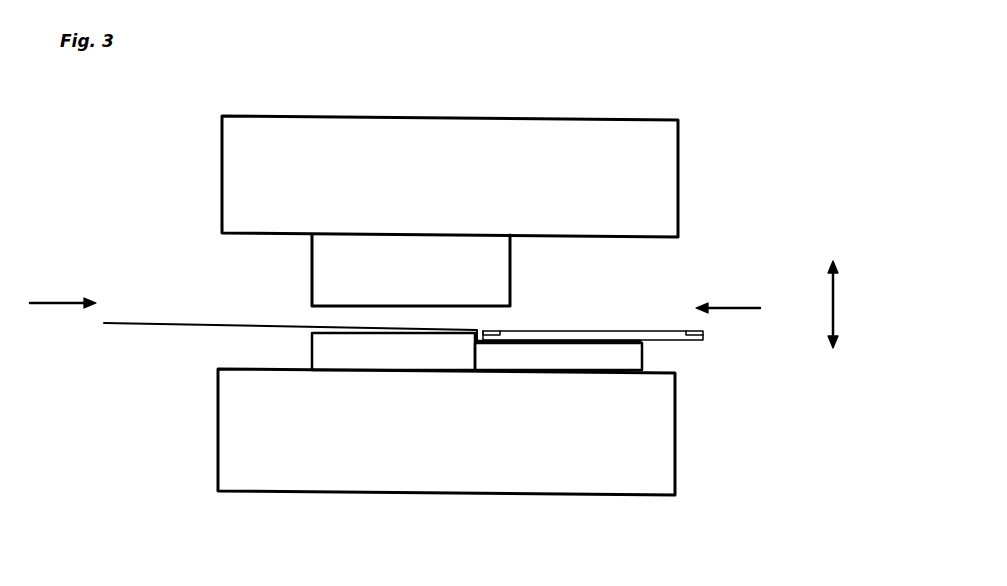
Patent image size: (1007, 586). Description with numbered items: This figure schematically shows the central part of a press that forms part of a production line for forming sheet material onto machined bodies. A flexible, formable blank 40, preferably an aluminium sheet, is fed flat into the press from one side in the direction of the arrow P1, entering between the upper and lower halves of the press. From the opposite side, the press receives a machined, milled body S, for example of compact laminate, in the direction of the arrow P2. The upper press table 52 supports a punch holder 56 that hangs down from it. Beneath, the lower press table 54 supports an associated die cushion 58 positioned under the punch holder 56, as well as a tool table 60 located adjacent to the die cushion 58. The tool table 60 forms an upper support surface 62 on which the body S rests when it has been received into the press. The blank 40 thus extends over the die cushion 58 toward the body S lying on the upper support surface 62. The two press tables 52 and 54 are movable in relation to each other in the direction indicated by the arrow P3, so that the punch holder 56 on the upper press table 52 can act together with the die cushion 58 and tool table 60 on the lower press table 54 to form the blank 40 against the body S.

The flexible, formable blank 40 is at (137, 323).
The upper press table 52 is at (565, 118).
The lower press table 54 is at (555, 495).
The punch holder 56 is at (312, 290).
The die cushion 58 is at (312, 358).
The tool table 60 is at (642, 352).
The upper support surface 62 is at (547, 338).
The body S is at (605, 330).
The arrow indicating feed direction of the blank P1 is at (63, 294).
The arrow indicating feed direction of the bodies P2 is at (728, 300).
The arrow indicating relative movement of the press tables P3 is at (847, 304).